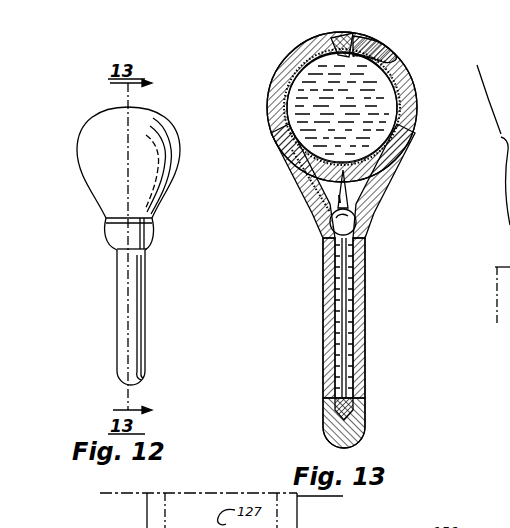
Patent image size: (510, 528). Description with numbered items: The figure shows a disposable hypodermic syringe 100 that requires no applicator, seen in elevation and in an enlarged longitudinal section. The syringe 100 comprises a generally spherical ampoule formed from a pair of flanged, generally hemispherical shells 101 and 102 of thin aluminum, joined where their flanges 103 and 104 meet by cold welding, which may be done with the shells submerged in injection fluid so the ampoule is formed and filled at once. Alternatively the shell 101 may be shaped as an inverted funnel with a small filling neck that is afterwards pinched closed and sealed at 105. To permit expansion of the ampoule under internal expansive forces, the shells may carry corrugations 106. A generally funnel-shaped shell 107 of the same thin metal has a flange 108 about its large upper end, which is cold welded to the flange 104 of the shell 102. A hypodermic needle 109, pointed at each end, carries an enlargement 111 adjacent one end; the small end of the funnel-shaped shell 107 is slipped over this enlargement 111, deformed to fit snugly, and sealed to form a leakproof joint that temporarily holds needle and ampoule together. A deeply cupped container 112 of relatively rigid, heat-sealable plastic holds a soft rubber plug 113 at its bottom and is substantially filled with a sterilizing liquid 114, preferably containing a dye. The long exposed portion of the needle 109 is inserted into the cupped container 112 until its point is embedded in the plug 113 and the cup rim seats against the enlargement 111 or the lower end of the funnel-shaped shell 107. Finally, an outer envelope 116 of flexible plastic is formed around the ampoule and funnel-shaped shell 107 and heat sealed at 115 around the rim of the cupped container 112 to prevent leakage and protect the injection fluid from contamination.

In FIG. 12, the syringe 100 is at (98, 223).
In FIG. 13, the hemispherical shell 101 is at (268, 88).
In FIG. 13, the hemispherical shell 102 is at (298, 178).
In FIG. 13, the flange 103 is at (274, 97).
In FIG. 13, the flange 104 is at (272, 111).
In FIG. 13, the pinched and sealed neck 105 is at (344, 32).
In FIG. 13, the corrugations 106 is at (398, 58).
In FIG. 13, the funnel-shaped shell 107 is at (390, 179).
In FIG. 13, the flange 108 is at (413, 117).
In FIG. 13, the hypodermic needle 109 is at (346, 290).
In FIG. 13, the enlargement 111 is at (318, 230).
In FIG. 12, the cupped container 112 is at (145, 327).
In FIG. 13, the cupped container 112 is at (323, 353).
In FIG. 13, the plug 113 is at (366, 428).
In FIG. 13, the sterilizing liquid 114 is at (366, 263).
In FIG. 13, the heat seal 115 is at (323, 244).
In FIG. 12, the outer envelope 116 is at (92, 178).
In FIG. 13, the outer envelope 116 is at (292, 56).